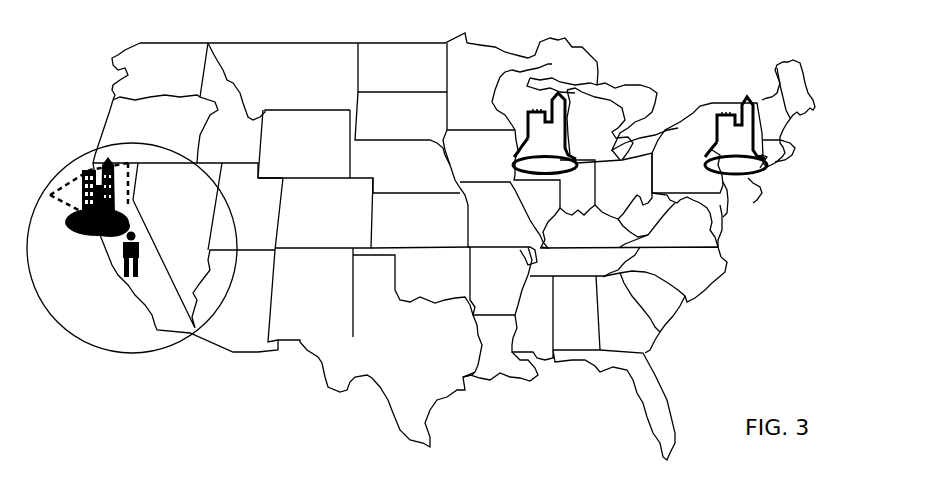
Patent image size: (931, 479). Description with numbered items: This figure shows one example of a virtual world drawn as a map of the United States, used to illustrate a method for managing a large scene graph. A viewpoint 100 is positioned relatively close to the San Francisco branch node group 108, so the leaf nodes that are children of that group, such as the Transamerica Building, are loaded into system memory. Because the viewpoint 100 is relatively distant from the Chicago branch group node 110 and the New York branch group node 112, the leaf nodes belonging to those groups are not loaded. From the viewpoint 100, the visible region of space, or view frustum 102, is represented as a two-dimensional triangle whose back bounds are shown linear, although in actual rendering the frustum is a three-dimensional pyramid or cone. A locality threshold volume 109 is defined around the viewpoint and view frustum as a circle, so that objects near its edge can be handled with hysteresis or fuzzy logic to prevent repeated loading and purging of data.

The viewpoint 100 is at (130, 280).
The view frustum 102 is at (128, 200).
The San Francisco branch node group 108 is at (82, 240).
The locality threshold volume 109 is at (135, 353).
The Chicago branch group node 110 is at (530, 107).
The New York branch group node 112 is at (757, 177).